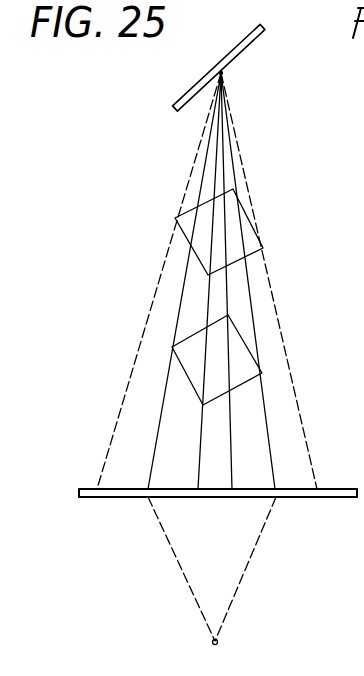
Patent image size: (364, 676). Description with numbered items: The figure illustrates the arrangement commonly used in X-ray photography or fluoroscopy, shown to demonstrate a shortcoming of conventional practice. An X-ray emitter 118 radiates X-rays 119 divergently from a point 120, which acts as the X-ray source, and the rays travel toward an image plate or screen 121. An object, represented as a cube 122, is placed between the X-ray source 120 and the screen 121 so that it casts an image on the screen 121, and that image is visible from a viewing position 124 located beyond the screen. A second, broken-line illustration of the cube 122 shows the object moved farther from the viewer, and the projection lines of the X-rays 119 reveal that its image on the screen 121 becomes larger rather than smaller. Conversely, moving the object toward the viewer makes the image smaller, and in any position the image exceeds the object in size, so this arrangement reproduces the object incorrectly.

The X-ray emitter 118 is at (243, 49).
The point 120 is at (226, 72).
The X-rays 119 is at (207, 153).
The cube 122 is at (245, 353).
The image plate or screen 121 is at (295, 498).
The viewing position 124 is at (218, 642).